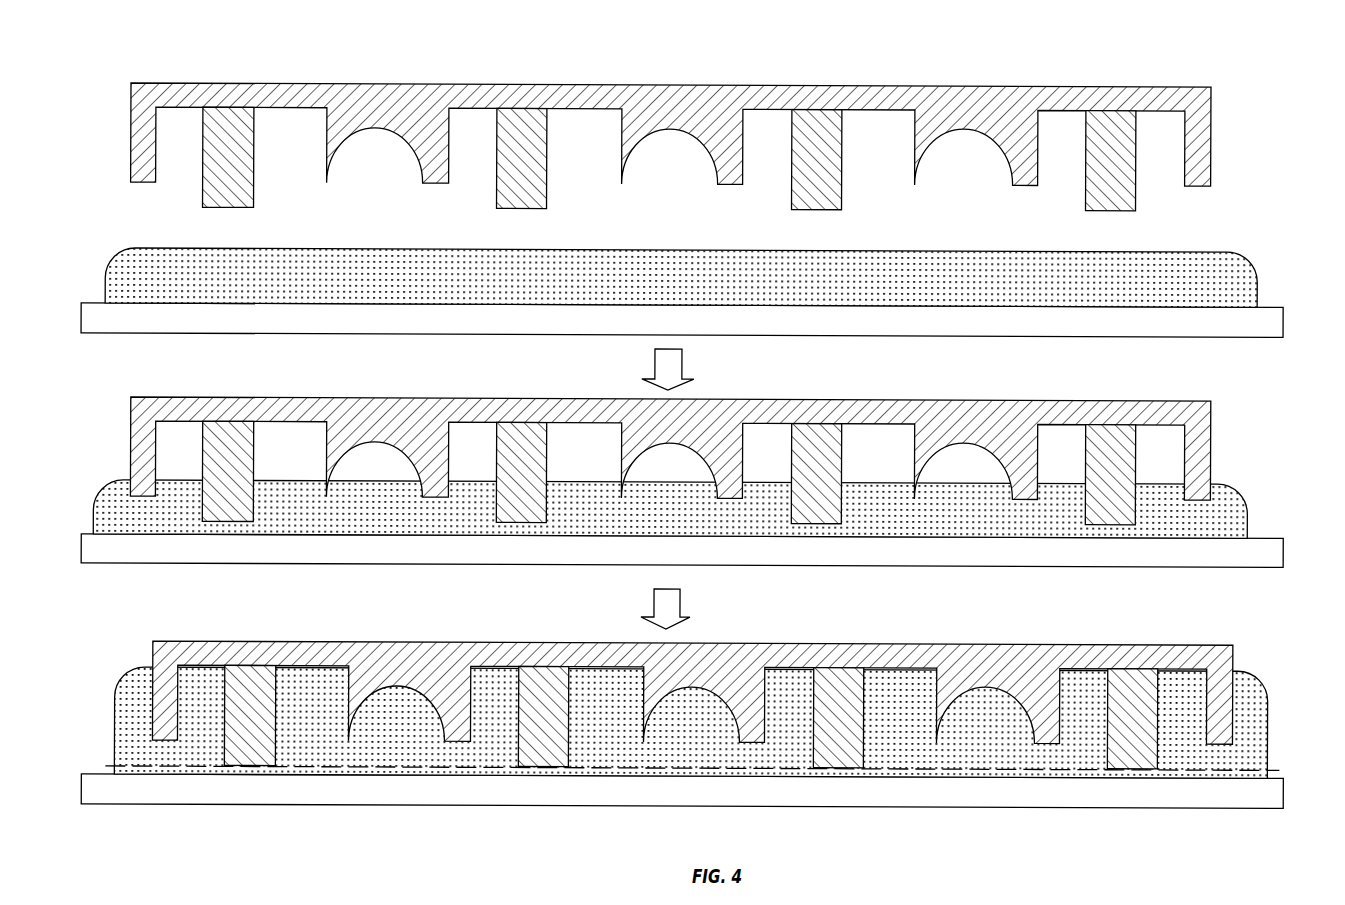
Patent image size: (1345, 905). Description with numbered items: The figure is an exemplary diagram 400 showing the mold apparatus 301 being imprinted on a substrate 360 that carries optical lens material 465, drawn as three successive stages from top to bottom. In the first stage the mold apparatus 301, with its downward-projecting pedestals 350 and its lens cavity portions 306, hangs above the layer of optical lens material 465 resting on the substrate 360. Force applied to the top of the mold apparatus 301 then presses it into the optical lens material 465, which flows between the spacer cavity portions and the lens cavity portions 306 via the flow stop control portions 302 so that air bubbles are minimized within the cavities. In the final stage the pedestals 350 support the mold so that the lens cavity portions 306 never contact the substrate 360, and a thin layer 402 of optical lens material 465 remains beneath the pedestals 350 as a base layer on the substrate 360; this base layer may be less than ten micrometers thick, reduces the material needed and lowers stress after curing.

The exemplary diagram 400 is at (97, 95).
The mold apparatus 301 is at (1211, 125).
The pedestals 350 is at (680, 438).
The lens cavity portion 306 is at (655, 156).
The optical lens material 465 is at (665, 287).
The substrate 360 is at (665, 329).
The thin layer 402 is at (84, 763).
The flow stop control portion 302 is at (321, 757).